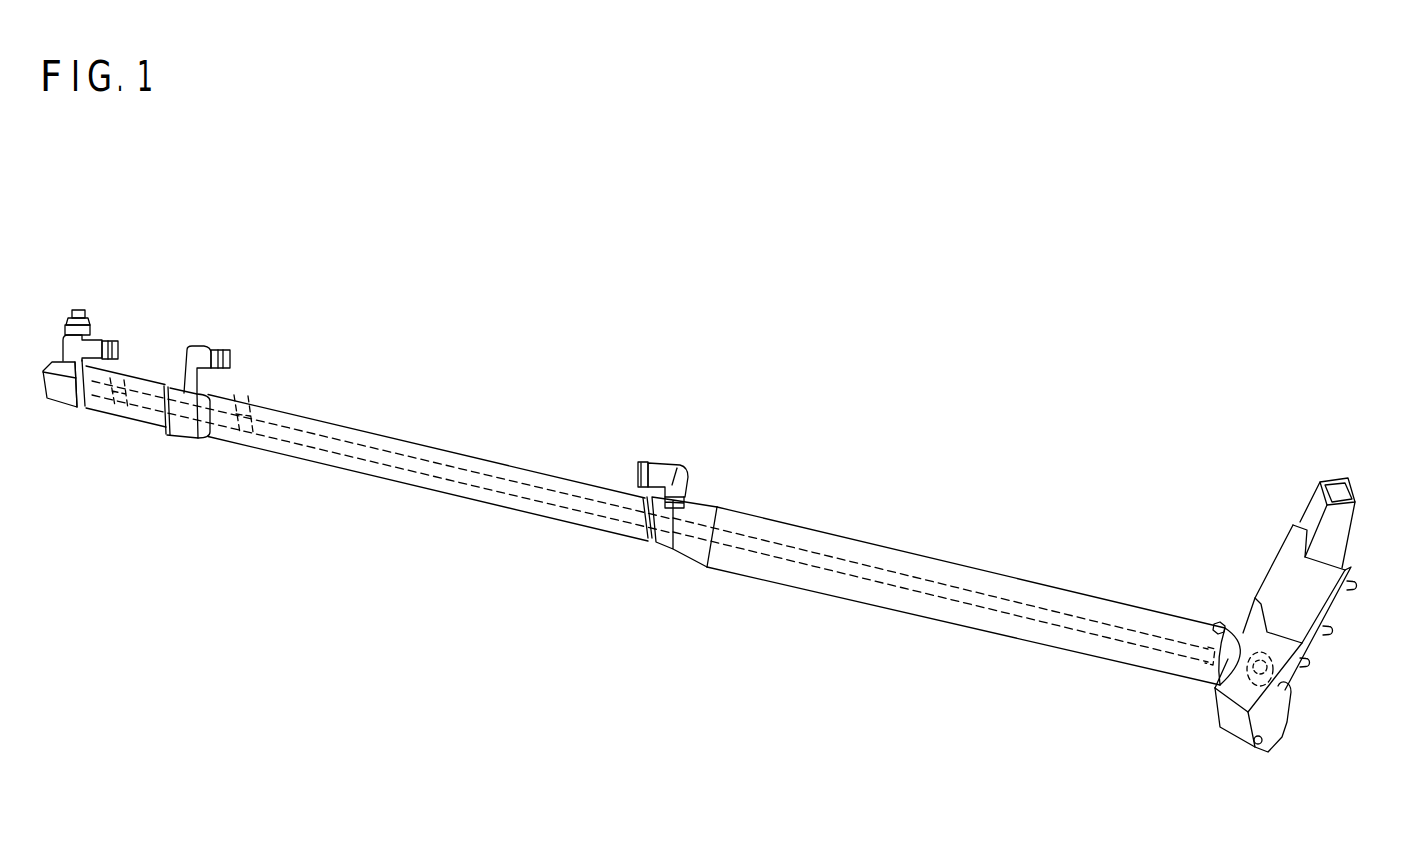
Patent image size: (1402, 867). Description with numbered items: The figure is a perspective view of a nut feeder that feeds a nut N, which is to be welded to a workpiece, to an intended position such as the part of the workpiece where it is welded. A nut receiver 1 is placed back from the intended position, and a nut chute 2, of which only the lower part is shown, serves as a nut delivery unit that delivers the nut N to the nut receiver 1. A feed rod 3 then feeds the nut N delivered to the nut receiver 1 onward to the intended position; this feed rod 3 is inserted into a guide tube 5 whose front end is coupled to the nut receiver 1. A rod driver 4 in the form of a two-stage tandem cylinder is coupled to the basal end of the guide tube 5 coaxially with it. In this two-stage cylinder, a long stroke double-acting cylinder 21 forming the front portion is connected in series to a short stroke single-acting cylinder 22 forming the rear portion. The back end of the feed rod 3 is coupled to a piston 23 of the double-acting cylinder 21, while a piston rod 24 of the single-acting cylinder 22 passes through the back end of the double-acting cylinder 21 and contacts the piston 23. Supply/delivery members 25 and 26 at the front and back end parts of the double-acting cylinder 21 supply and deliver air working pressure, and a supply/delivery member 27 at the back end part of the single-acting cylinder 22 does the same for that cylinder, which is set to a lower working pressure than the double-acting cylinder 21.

The nut receiver 1 is at (1246, 617).
The nut chute 2 is at (1357, 518).
The feed rod 3 is at (838, 575).
The rod driver 4 is at (546, 464).
The guide tube 5 is at (950, 563).
The double-acting cylinder 21 is at (460, 498).
The single-acting cylinder 22 is at (130, 420).
The piston 23 is at (243, 402).
The piston rod 24 is at (140, 380).
The supply/delivery member 25 is at (661, 462).
The supply/delivery member 26 is at (210, 345).
The supply/delivery member 27 is at (95, 338).
The nut N is at (1252, 690).